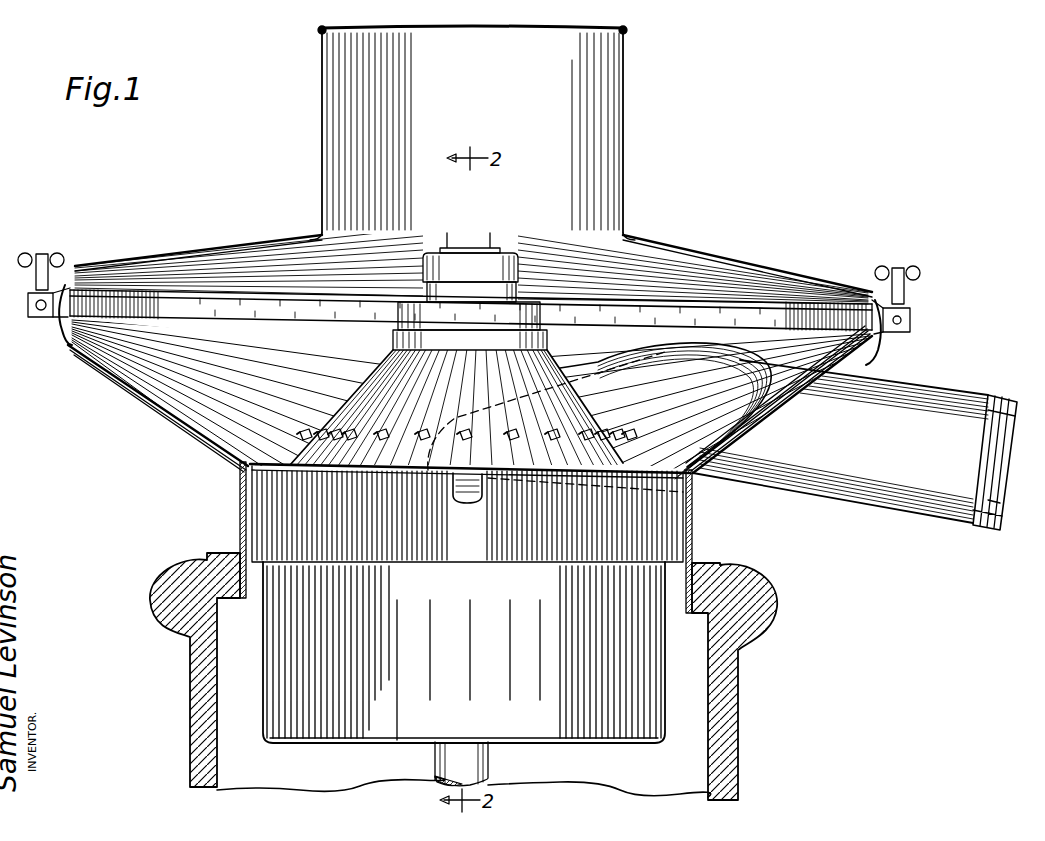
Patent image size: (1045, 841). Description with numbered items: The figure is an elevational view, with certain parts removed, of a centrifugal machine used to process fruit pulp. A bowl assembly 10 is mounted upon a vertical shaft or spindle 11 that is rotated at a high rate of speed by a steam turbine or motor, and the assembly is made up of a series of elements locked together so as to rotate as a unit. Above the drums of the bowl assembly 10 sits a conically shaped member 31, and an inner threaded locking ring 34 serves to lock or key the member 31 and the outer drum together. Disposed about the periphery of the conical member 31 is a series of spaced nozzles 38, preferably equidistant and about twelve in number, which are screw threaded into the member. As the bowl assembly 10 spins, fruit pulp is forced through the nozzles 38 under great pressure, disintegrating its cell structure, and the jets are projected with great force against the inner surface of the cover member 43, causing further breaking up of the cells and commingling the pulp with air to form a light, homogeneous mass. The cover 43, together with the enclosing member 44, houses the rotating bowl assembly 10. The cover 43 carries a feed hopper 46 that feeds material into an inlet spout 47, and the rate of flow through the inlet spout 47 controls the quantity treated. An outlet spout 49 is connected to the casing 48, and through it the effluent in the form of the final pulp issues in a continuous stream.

The bowl assembly 10 is at (468, 674).
The vertical shaft or spindle 11 is at (490, 762).
The conically shaped member 31 is at (390, 354).
The inner threaded locking ring 34 is at (258, 506).
The nozzles 38 is at (464, 430).
The cover member 43 is at (190, 254).
The enclosing member 44 is at (738, 704).
The feed hopper 46 is at (623, 105).
The inlet spout 47 is at (479, 235).
The casing 48 is at (150, 398).
The outlet spout 49 is at (925, 523).